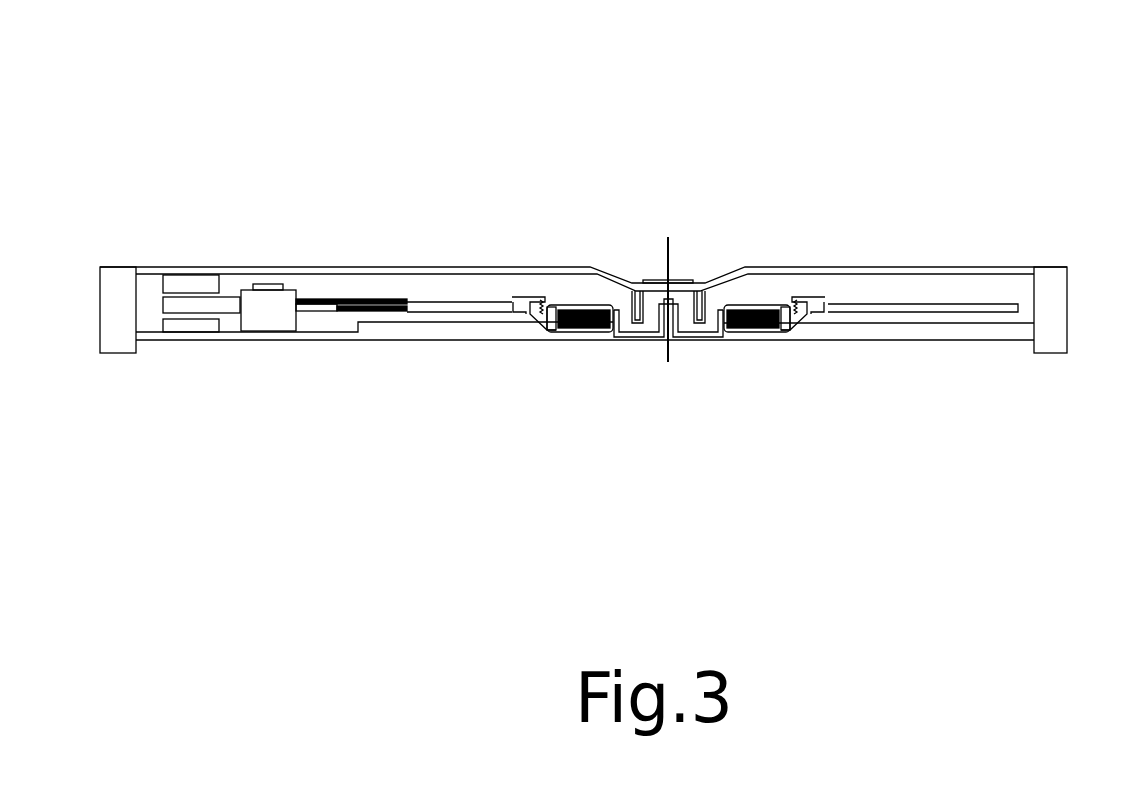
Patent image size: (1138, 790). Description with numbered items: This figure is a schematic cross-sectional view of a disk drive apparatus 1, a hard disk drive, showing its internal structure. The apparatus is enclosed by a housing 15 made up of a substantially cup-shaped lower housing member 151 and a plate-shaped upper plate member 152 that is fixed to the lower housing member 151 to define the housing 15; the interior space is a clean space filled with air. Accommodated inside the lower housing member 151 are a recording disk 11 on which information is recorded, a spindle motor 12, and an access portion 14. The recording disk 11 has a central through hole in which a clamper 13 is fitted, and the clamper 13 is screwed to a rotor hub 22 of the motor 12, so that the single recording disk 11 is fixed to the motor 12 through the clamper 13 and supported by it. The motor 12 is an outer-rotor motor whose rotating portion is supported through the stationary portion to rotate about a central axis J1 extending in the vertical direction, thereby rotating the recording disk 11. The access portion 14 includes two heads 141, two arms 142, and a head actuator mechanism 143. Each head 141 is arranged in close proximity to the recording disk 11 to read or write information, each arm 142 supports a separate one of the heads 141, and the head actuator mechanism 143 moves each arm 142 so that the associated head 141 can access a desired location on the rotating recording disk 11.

The disk drive apparatus 1 is at (155, 70).
The recording disk 11 is at (880, 310).
The spindle motor 12 is at (632, 354).
The clamper 13 is at (805, 302).
The access portion 14 is at (318, 97).
The head 141 is at (400, 300).
The arm 142 is at (318, 300).
The head actuator mechanism 143 is at (262, 310).
The housing 15 is at (1048, 82).
The lower housing member 151 is at (1060, 318).
The upper plate member 152 is at (1018, 265).
The rotor hub 22 is at (560, 290).
The central axis J1 is at (664, 265).